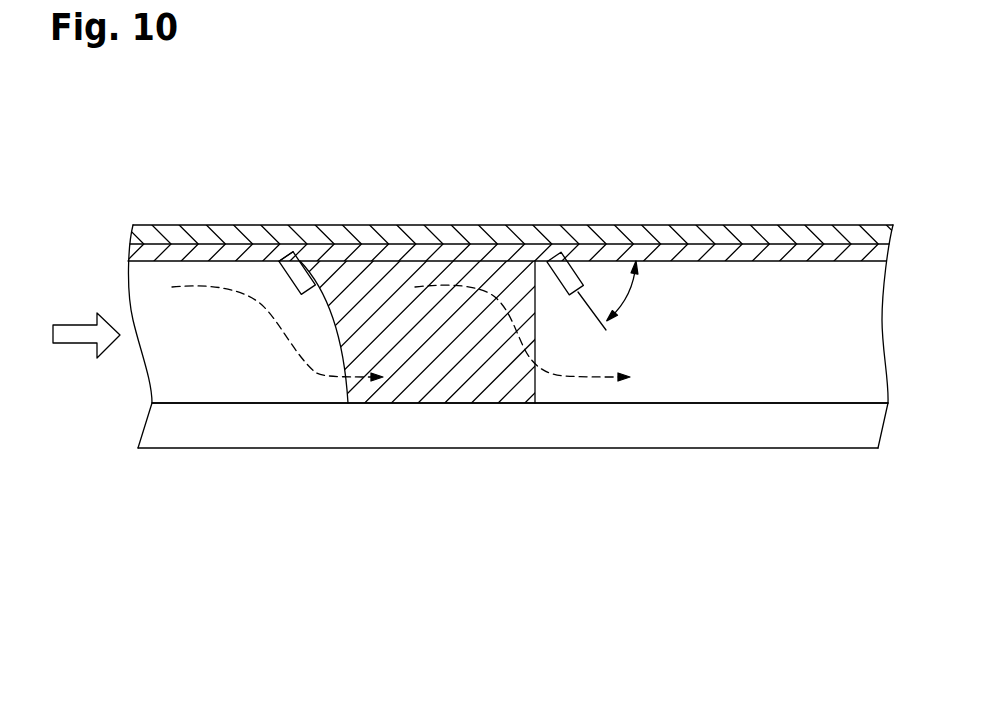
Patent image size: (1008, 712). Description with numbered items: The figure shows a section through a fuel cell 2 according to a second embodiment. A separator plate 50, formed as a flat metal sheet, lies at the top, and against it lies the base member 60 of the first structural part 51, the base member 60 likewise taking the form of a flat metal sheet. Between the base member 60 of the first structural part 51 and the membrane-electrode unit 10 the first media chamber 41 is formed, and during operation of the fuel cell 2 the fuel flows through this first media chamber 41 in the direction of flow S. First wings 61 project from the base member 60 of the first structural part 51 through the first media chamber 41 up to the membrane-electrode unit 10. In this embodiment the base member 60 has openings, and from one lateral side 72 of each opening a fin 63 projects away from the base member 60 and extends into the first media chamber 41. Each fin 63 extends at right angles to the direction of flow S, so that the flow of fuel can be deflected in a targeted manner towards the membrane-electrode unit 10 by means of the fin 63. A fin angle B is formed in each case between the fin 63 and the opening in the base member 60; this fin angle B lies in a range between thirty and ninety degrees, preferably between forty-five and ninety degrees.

The fuel cell 2 is at (121, 160).
The membrane-electrode unit 10 is at (168, 422).
The first media chamber 41 is at (122, 372).
The separator plate 50 is at (148, 236).
The first structural part 51 is at (425, 210).
The base member 60 is at (145, 250).
The first wings 61 is at (463, 388).
The fin 63 is at (283, 267).
The lateral side of the opening 72 is at (292, 256).
The direction of flow S is at (73, 323).
The fin angle B is at (629, 293).